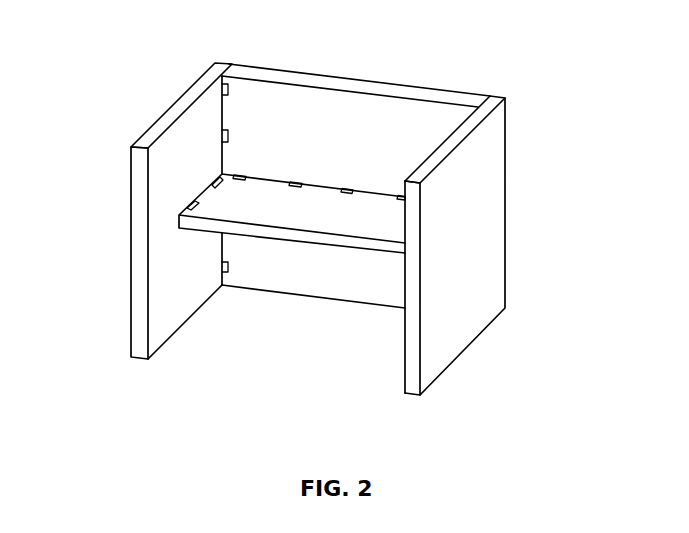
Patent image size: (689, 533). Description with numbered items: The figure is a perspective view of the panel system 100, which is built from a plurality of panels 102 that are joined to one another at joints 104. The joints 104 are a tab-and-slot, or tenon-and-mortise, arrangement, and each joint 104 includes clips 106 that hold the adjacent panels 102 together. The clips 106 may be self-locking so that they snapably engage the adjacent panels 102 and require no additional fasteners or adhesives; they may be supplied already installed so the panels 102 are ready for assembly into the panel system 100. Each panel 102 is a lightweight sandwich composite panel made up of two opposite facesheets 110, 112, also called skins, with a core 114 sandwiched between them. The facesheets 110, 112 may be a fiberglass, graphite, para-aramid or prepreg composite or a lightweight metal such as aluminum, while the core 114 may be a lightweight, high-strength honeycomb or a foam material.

The panel system 100 is at (492, 59).
The panel 102 is at (306, 250).
The joint 104 is at (231, 91).
The clip 106 is at (230, 270).
The facesheet 110 is at (421, 270).
The facesheet 112 is at (404, 380).
The core 114 is at (412, 393).